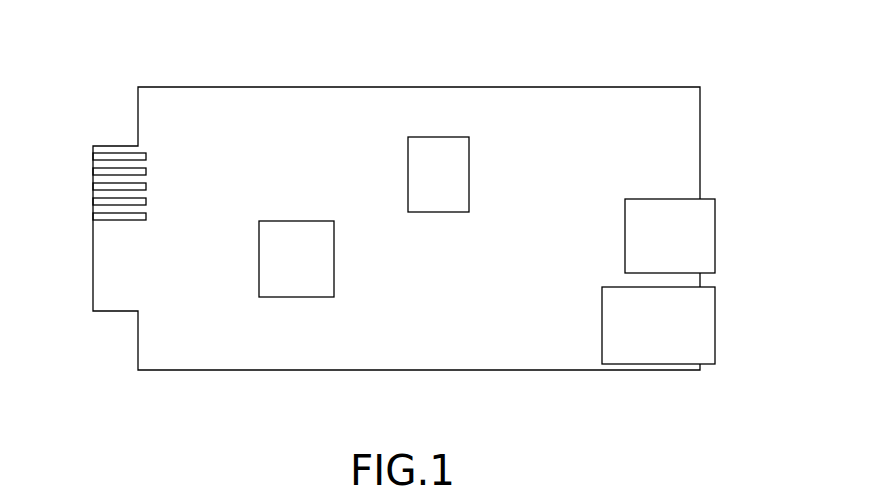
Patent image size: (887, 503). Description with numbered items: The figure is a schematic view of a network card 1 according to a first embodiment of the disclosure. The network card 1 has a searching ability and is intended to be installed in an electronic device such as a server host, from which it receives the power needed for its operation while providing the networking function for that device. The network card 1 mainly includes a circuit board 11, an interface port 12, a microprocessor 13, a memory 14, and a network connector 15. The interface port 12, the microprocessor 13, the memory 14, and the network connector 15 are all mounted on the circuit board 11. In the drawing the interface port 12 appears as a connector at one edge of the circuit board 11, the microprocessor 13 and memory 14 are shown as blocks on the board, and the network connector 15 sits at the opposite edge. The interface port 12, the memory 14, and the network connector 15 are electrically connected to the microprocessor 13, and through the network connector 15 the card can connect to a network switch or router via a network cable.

The network card 1 is at (490, 62).
The circuit board 11 is at (581, 96).
The interface port 12 is at (98, 246).
The microprocessor 13 is at (292, 285).
The memory 14 is at (436, 150).
The network connector 15 is at (705, 235).